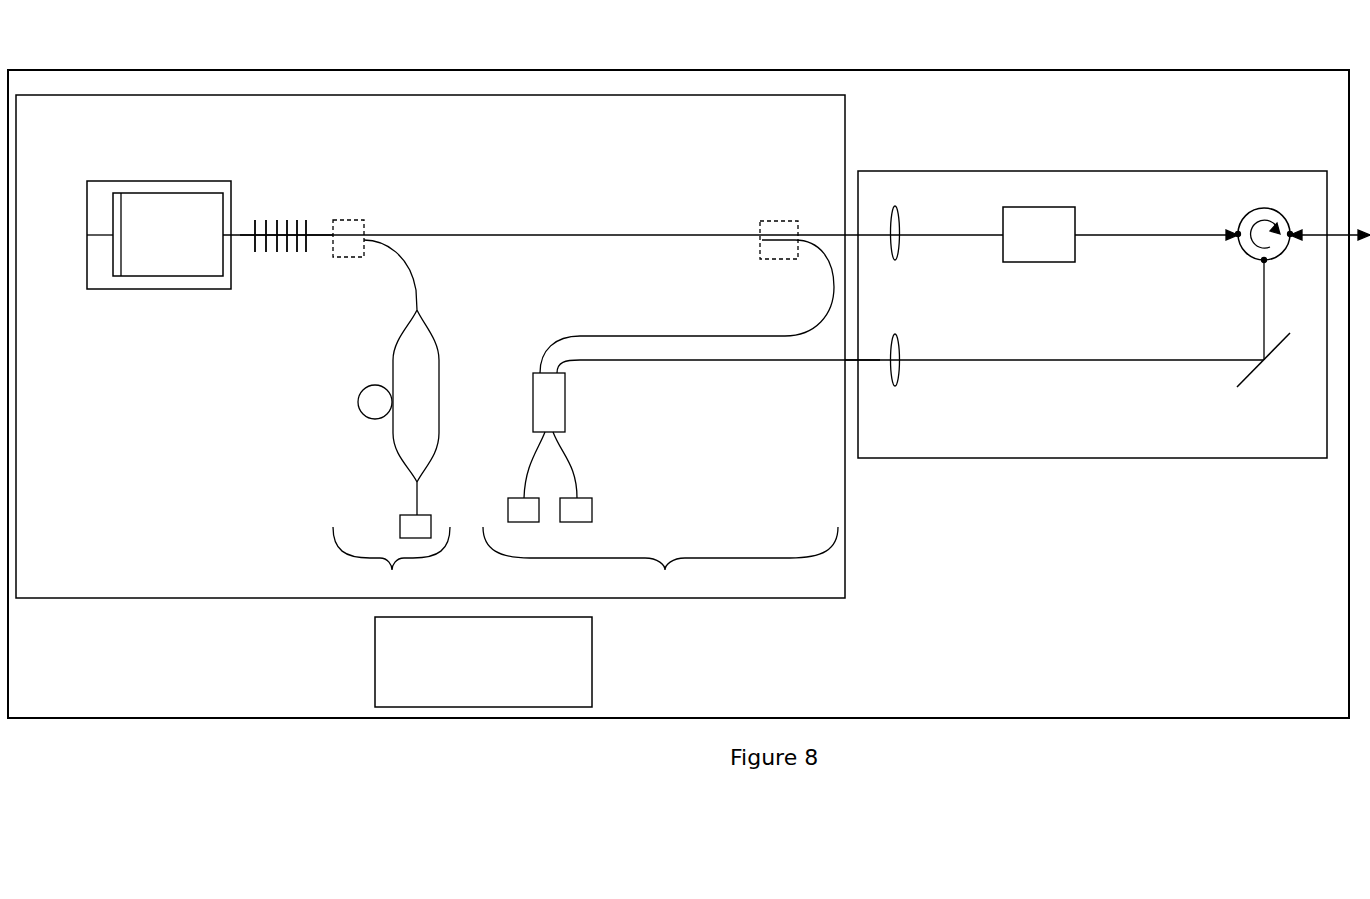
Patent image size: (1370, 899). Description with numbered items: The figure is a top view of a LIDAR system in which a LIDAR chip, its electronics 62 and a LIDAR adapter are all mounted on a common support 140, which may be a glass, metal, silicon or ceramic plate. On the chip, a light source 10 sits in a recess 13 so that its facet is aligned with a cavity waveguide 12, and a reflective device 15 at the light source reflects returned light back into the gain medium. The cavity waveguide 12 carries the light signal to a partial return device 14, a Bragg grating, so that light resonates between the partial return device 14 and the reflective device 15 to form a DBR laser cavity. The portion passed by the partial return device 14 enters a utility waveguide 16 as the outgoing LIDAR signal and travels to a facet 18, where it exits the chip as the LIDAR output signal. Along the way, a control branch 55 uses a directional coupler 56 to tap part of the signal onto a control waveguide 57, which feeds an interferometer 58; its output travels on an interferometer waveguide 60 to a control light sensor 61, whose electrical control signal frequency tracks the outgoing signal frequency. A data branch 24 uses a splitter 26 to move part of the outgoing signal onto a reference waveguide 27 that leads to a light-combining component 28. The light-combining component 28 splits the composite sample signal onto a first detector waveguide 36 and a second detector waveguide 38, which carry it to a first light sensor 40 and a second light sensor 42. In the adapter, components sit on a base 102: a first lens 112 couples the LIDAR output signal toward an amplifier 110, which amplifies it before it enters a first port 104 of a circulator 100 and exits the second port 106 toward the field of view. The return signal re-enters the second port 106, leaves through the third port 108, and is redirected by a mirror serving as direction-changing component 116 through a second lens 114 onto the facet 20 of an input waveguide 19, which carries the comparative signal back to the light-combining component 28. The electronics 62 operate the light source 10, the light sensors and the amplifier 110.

The common support 140 is at (1150, 80).
The recess 13 is at (160, 181).
The light source 10 is at (157, 276).
The reflective device 15 is at (112, 235).
The cavity waveguide 12 is at (240, 232).
The partial return device 14 is at (288, 264).
The utility waveguide 16 is at (420, 235).
The directional coupler 56 is at (352, 220).
The control waveguide 57 is at (400, 262).
The interferometer 58 is at (349, 385).
The control light sensor 61 is at (400, 530).
The interferometer waveguide 60 is at (415, 505).
The control branch 55 is at (391, 565).
The light-combining component 28 is at (567, 382).
The first detector waveguide 36 is at (530, 465).
The second detector waveguide 38 is at (570, 470).
The first light sensor 40 is at (509, 498).
The second light sensor 42 is at (592, 498).
The data branch 24 is at (660, 565).
The splitter 26 is at (795, 220).
The reference waveguide 27 is at (790, 335).
The facet 18 is at (858, 235).
The input waveguide 19 is at (800, 362).
The facet 20 is at (853, 362).
The base 102 is at (1180, 171).
The first lens 112 is at (900, 247).
The second lens 114 is at (900, 335).
The amplifier 110 is at (1030, 262).
The circulator 100 is at (1252, 198).
The first port 104 is at (1236, 242).
The second port 106 is at (1307, 207).
The third port 108 is at (1260, 263).
The direction-changing component 116 is at (1286, 306).
The electronics 62 is at (375, 643).